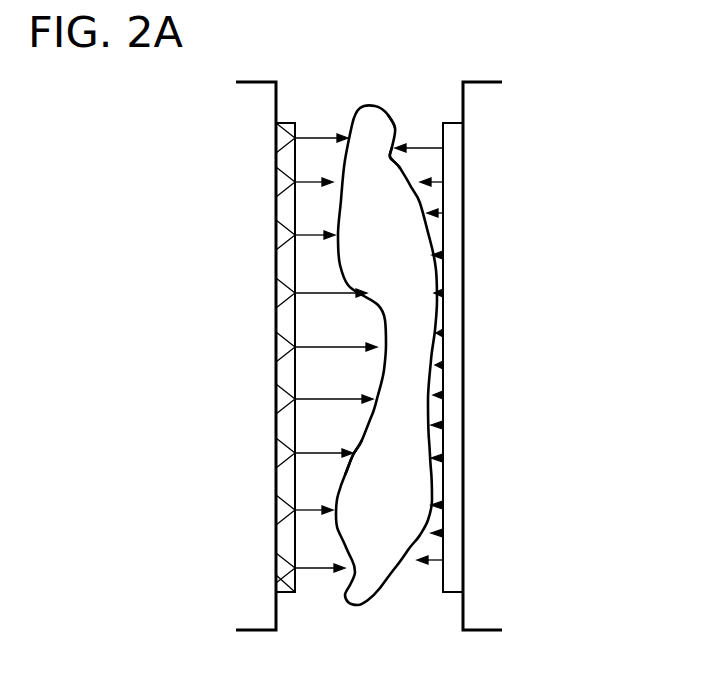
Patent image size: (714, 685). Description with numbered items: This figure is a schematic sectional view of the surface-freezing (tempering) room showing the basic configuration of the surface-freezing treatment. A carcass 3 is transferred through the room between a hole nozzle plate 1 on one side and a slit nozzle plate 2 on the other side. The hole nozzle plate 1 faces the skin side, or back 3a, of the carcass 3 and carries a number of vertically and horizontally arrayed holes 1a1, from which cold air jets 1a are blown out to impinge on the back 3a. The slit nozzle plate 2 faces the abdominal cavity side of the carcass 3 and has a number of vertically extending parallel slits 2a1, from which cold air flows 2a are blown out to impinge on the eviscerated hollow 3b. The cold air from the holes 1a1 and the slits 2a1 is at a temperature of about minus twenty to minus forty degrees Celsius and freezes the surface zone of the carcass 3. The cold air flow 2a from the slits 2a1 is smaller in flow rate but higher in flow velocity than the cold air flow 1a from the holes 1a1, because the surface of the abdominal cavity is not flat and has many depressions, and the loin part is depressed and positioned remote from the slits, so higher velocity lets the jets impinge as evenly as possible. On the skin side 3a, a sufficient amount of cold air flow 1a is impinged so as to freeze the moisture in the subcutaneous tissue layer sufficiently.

The hole nozzle plate 1 is at (521, 356).
The cold air jet 1a is at (438, 180).
The hole 1a1 is at (443, 560).
The slit nozzle plate 2 is at (223, 356).
The cold air flow 2a is at (312, 182).
The slit 2a1 is at (295, 594).
The carcass 3 is at (387, 111).
The back (skin side) 3a is at (402, 171).
The eviscerated hollow 3b is at (352, 455).